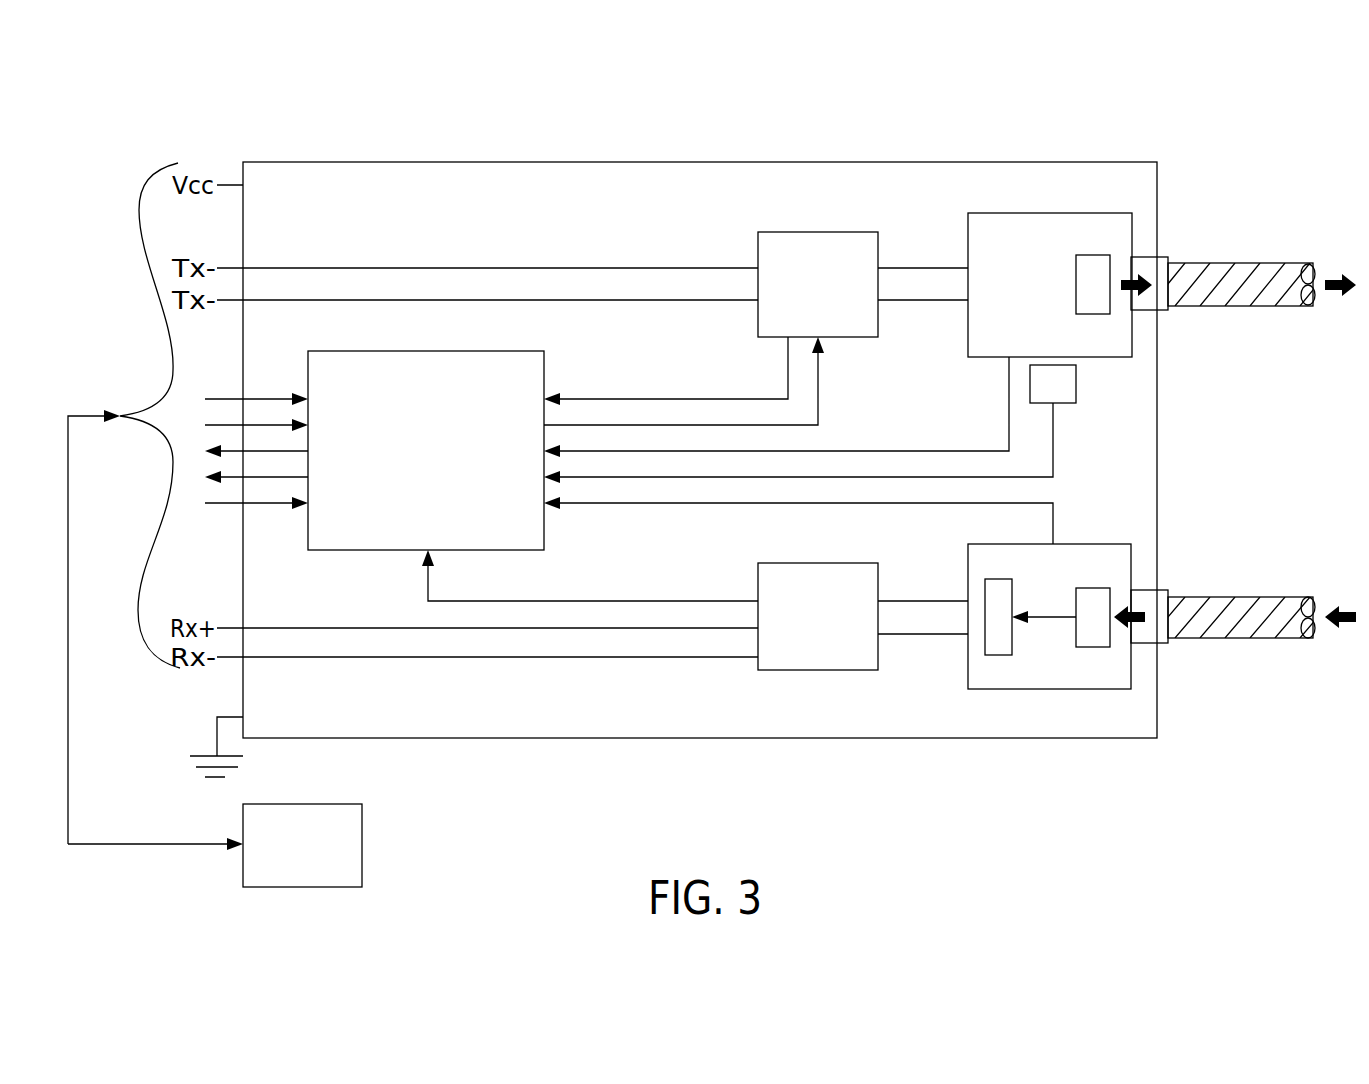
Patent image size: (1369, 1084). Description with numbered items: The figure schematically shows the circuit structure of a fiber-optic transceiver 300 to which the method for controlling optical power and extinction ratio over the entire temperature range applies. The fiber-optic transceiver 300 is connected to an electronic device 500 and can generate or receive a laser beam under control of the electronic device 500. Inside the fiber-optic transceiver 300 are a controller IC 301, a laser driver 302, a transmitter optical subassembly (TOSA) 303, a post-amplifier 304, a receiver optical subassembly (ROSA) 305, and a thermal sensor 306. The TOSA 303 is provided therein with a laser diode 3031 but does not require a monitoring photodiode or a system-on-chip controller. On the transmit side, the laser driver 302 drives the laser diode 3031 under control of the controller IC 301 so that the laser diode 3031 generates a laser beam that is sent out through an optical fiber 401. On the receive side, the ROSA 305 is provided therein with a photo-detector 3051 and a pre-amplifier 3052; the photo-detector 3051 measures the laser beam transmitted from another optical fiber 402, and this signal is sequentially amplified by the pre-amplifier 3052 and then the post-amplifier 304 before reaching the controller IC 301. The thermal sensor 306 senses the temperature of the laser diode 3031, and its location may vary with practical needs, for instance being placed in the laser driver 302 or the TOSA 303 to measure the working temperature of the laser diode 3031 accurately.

The fiber-optic transceiver 300 is at (683, 155).
The controller IC 301 is at (415, 350).
The laser driver 302 is at (818, 242).
The transmitter optical subassembly (TOSA) 303 is at (1085, 195).
The laser diode 3031 is at (1100, 266).
The post-amplifier 304 is at (818, 655).
The receiver optical subassembly (ROSA) 305 is at (1045, 672).
The photo-detector 3051 is at (1097, 640).
The pre-amplifier 3052 is at (1000, 645).
The thermal sensor 306 is at (1060, 385).
The optical fiber 401 is at (1262, 272).
The optical fiber 402 is at (1268, 606).
The electronic device 500 is at (345, 849).